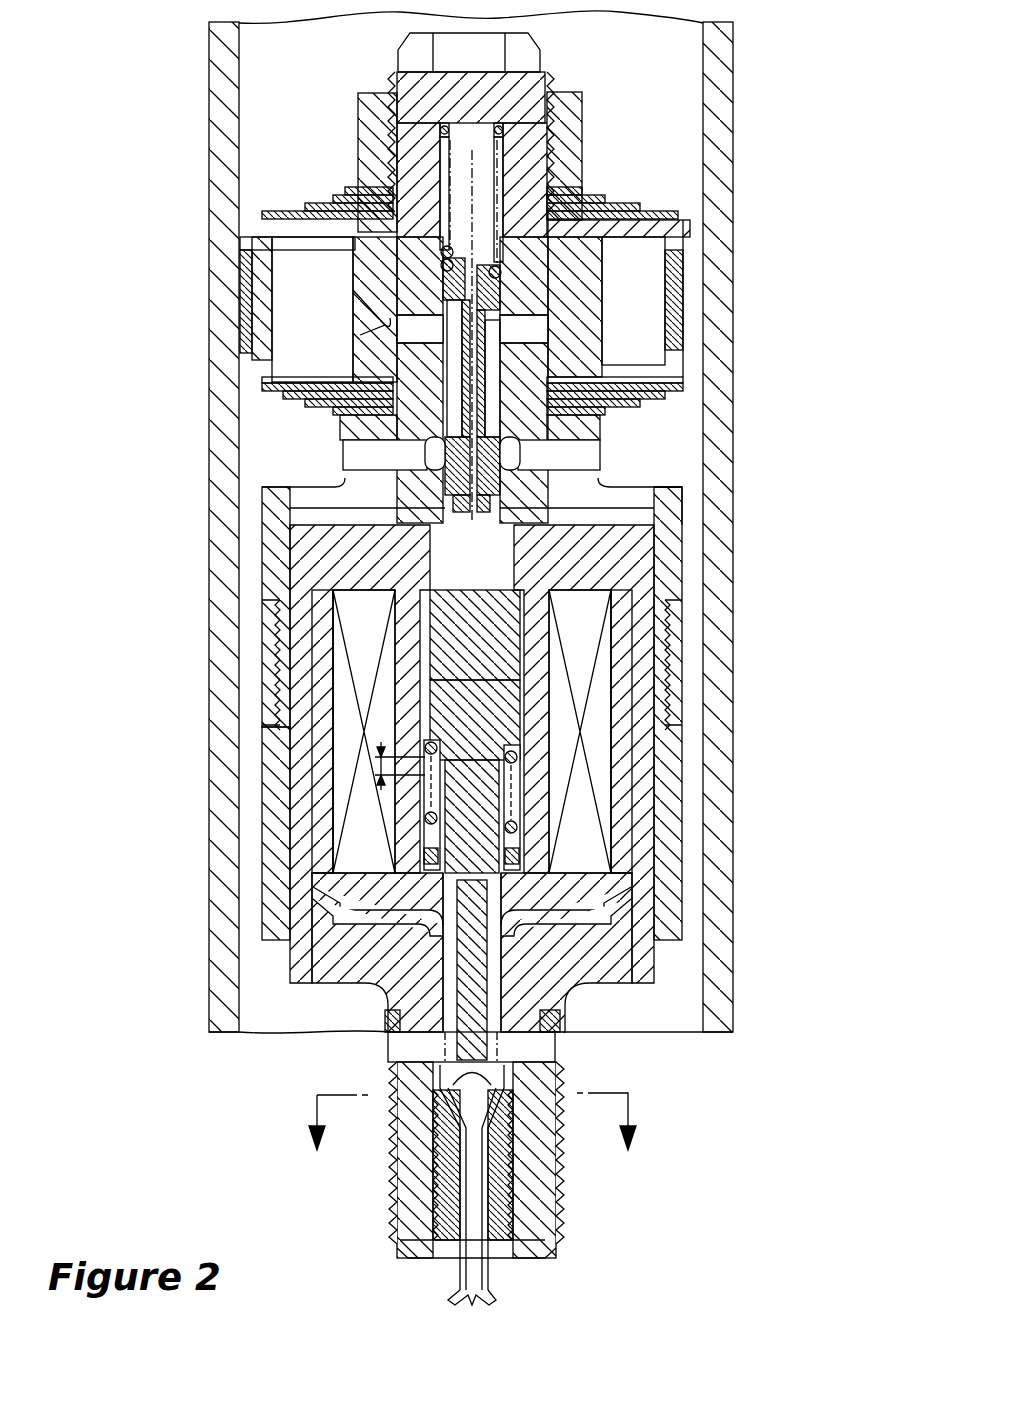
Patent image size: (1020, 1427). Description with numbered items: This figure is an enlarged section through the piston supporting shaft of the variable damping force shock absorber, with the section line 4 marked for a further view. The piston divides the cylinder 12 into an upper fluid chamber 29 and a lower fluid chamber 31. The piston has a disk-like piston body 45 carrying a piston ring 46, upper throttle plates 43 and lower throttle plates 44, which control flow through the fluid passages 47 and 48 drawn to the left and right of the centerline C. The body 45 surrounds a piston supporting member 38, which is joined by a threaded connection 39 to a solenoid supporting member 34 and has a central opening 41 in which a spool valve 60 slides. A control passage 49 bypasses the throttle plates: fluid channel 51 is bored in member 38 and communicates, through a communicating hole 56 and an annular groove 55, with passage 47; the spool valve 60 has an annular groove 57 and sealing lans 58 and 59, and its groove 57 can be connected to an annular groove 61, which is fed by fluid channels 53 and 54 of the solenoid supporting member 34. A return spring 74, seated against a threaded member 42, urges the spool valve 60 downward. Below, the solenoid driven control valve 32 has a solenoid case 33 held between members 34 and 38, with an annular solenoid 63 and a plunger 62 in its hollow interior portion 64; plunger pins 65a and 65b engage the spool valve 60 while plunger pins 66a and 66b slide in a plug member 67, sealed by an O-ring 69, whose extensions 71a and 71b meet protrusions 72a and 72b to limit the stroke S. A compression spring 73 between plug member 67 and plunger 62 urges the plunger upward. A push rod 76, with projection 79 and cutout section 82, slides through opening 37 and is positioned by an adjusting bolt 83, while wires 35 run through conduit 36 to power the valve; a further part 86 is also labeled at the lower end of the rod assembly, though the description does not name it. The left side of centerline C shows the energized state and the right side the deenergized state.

The upper fluid chamber 29 is at (262, 103).
The cylinder 12 is at (733, 150).
The threaded member 42 is at (450, 75).
The return spring 74 is at (430, 135).
The upper throttle plates 43 is at (318, 200).
The fluid passage 47 is at (290, 248).
The fluid passage 48 is at (640, 262).
The piston ring 46 is at (240, 322).
The communicating hole 56 is at (387, 317).
The annular groove 55 is at (382, 330).
The fluid channel 51 is at (403, 333).
The lan 58 is at (602, 320).
The disk-like piston body 45 is at (280, 372).
The lower throttle plates 44 is at (290, 400).
The annular groove 57 is at (605, 403).
The lower fluid chamber 31 is at (252, 468).
The control passage 49 is at (545, 415).
The fluid channel 53 is at (348, 462).
The annular groove 61 is at (600, 440).
The fluid channel 54 is at (590, 457).
The spool valve 60 is at (345, 487).
The lan 59 is at (540, 507).
The centrally located opening 41 is at (300, 520).
The plunger pin 65a is at (345, 540).
The plunger pin 65b is at (560, 527).
The plunger 62 is at (435, 607).
The piston supporting member 38 is at (673, 575).
The protrusion 72a is at (426, 745).
The threaded connection 39 is at (683, 622).
The solenoid driven control valve 32 is at (690, 732).
The distance S is at (345, 760).
The hollow interior portion 64 is at (515, 755).
The annular solenoid 63 is at (345, 768).
The protrusion 72b is at (517, 768).
The extension 71a is at (318, 835).
The extension 71b is at (520, 805).
The solenoid case 33 is at (262, 838).
The compression spring 73 is at (518, 833).
The O-ring 69 is at (520, 858).
The plunger pin 66a is at (335, 905).
The solenoid supporting member 34 is at (560, 900).
The projection 79 is at (395, 945).
The plunger pin 66b is at (600, 925).
The plug member 67 is at (560, 950).
The push rod 76 is at (477, 1020).
The centrally located opening 37 is at (563, 1028).
The cutout section 82 is at (450, 1123).
The adjusting bolt 83 is at (442, 1205).
The conduit 36 is at (463, 1215).
The channel 86 is at (448, 1248).
The electrical wires 35 is at (495, 1300).
The centerline C is at (472, 238).
The section line 4 is at (461, 1121).